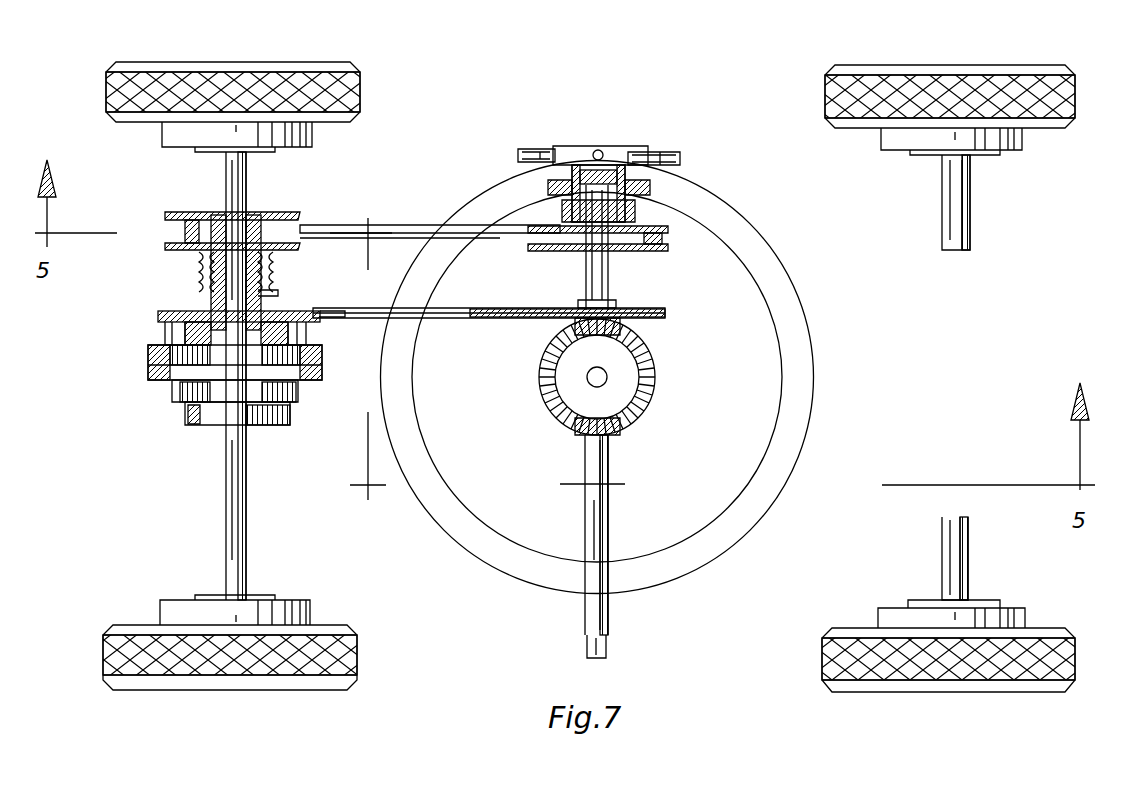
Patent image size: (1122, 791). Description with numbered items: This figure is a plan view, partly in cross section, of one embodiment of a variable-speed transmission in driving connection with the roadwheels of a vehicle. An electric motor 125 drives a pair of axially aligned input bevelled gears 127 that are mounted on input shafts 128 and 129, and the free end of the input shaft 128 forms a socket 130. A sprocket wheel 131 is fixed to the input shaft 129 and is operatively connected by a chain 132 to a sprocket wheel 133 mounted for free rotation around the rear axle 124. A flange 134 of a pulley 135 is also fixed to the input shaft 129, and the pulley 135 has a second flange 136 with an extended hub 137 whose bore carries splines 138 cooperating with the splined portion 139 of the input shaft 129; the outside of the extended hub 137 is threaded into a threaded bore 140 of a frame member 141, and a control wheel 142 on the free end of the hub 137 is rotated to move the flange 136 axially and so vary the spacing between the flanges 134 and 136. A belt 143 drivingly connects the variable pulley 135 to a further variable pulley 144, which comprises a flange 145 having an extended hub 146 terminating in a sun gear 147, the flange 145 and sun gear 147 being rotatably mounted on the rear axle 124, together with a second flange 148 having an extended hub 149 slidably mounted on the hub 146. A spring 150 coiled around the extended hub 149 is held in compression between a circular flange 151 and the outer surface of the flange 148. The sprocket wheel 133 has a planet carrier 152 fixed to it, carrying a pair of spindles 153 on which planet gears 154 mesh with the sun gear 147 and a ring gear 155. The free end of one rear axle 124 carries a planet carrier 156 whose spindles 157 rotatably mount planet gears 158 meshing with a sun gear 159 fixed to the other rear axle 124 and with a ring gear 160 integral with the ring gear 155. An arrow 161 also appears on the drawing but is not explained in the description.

The rear axle 124 is at (246, 192).
The electric motor 125 is at (625, 376).
The input bevelled gear 127 is at (640, 335).
The input shaft 128 is at (594, 516).
The input shaft 129 is at (594, 286).
The socket 130 is at (604, 648).
The sprocket wheel 131 is at (672, 312).
The chain 132 is at (332, 311).
The sprocket wheel 133 is at (288, 311).
The flange 134 is at (632, 252).
The pulley 135 is at (683, 239).
The second flange 136 is at (545, 228).
The extended hub 137 is at (625, 182).
The splines 138 is at (575, 180).
The splined portion 139 is at (660, 208).
The threaded bore 140 is at (582, 178).
The frame member 141 is at (640, 192).
The control wheel 142 is at (597, 146).
The belt 143 is at (312, 225).
The variable pulley 144 is at (165, 225).
The flange 145 is at (210, 214).
The extended hub 146 is at (208, 300).
The sun gear 147 is at (300, 348).
The second flange 148 is at (196, 250).
The extended hub 149 is at (200, 276).
The spring 150 is at (273, 268).
The circular flange 151 is at (270, 292).
The planet carrier 152 is at (308, 330).
The spindles 153 is at (168, 328).
The planet gears 154 is at (160, 352).
The ring gear 155 is at (322, 362).
The planet carrier 156 is at (270, 428).
The spindles 157 is at (290, 412).
The planet gears 158 is at (188, 410).
The sun gear 159 is at (218, 425).
The ring gear 160 is at (175, 398).
The direction arrow 161 is at (825, 405).